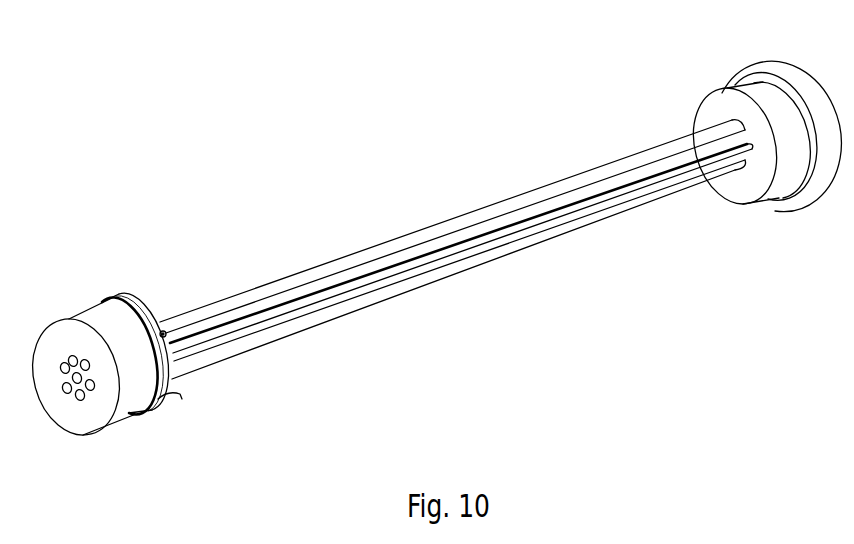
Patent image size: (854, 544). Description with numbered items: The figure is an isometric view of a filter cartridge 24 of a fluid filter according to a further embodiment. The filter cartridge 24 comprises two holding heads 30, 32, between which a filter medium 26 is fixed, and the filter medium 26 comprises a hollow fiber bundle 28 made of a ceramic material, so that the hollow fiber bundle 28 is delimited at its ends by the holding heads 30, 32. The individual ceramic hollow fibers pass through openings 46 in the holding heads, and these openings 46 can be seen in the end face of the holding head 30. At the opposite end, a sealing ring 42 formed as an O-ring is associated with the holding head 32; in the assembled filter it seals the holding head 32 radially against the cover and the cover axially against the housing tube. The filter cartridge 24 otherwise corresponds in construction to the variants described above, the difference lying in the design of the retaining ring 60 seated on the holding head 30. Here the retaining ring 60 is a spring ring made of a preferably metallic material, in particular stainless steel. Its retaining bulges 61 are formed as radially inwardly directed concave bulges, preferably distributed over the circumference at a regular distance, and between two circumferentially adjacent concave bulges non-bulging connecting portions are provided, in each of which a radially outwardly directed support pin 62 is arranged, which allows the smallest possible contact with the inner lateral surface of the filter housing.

The filter cartridge 24 is at (609, 103).
The filter medium 26 is at (498, 256).
The hollow fiber bundle 28 is at (488, 205).
The holding head 30 is at (119, 423).
The holding head 32 is at (741, 204).
The sealing ring 42 is at (762, 64).
The openings 46 is at (63, 390).
The retaining ring 60 is at (116, 297).
The retaining bulges 61 is at (153, 320).
The support pin 62 is at (180, 394).